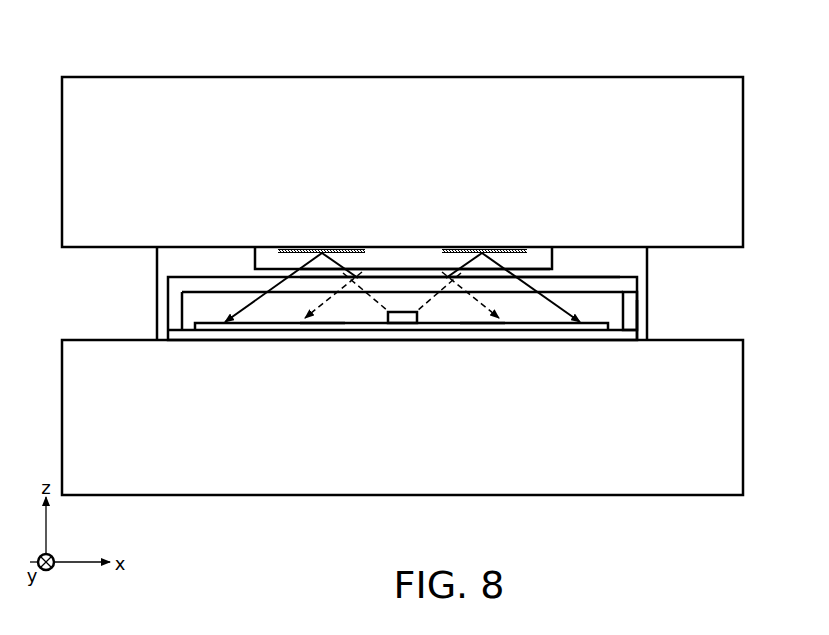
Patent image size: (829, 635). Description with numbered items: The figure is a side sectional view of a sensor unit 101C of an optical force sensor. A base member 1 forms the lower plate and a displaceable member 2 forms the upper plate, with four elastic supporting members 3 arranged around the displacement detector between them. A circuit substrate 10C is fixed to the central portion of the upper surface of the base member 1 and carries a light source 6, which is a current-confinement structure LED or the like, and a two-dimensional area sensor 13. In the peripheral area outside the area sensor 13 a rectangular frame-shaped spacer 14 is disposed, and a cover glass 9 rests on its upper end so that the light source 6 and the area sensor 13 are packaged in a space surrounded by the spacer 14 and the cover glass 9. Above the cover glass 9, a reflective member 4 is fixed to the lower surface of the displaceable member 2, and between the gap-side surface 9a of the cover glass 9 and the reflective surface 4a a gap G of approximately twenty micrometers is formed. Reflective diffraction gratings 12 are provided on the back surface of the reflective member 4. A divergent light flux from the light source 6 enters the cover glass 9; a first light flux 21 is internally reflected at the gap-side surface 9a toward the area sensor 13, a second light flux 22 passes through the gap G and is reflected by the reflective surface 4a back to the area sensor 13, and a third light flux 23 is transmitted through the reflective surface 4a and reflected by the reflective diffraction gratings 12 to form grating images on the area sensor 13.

The base member 1 is at (247, 492).
The displaceable member 2 is at (530, 78).
The elastic supporting member 3 is at (75, 293).
The reflective member 4 is at (537, 247).
The reflective surface 4a is at (545, 271).
The light source 6 is at (400, 322).
The cover glass 9 is at (637, 277).
The gap-side surface of the cover glass 9a is at (607, 277).
The circuit substrate 10C is at (638, 337).
The reflective diffraction grating 12 is at (292, 252).
The two-dimensional area sensor 13 is at (560, 328).
The spacer 14 is at (628, 308).
The first light flux 21 is at (324, 322).
The second light flux 22 is at (318, 324).
The third light flux 23 is at (246, 315).
The sensor unit 101C is at (707, 63).
The gap G is at (250, 275).